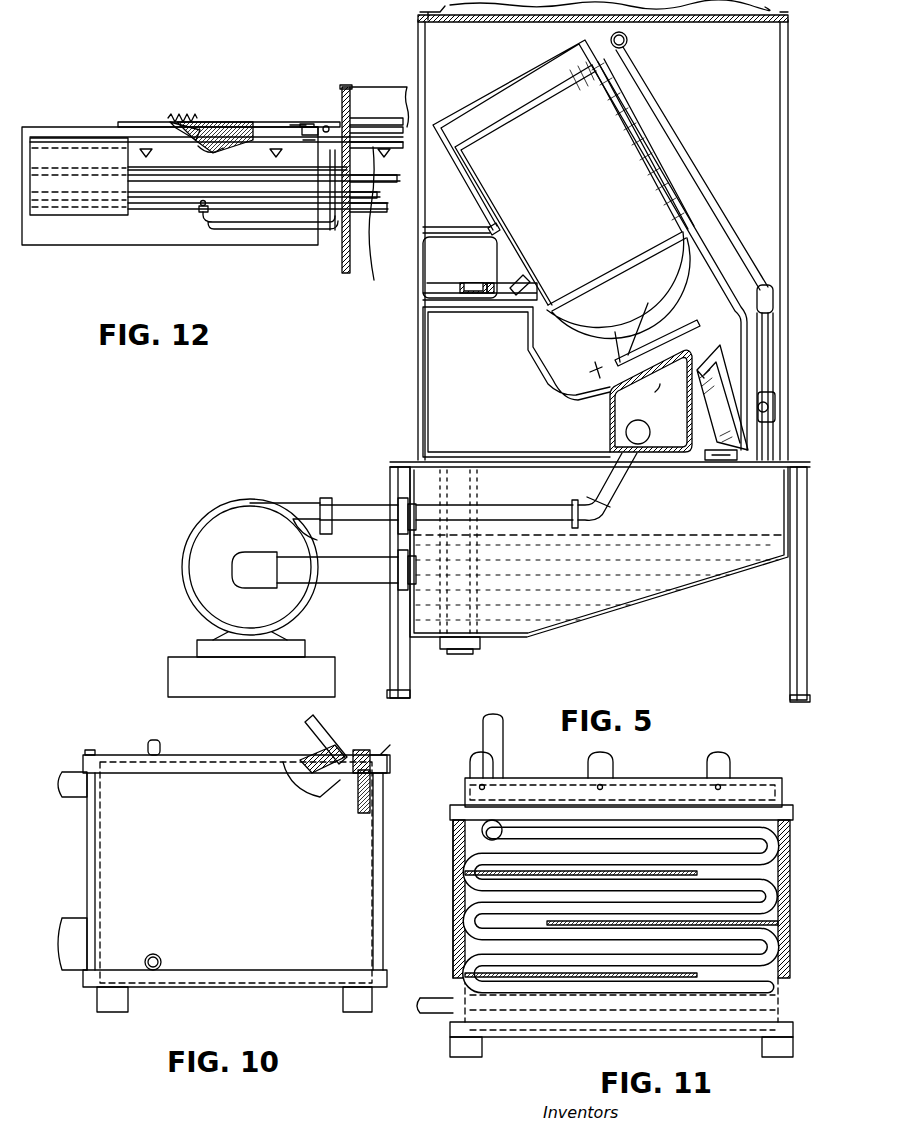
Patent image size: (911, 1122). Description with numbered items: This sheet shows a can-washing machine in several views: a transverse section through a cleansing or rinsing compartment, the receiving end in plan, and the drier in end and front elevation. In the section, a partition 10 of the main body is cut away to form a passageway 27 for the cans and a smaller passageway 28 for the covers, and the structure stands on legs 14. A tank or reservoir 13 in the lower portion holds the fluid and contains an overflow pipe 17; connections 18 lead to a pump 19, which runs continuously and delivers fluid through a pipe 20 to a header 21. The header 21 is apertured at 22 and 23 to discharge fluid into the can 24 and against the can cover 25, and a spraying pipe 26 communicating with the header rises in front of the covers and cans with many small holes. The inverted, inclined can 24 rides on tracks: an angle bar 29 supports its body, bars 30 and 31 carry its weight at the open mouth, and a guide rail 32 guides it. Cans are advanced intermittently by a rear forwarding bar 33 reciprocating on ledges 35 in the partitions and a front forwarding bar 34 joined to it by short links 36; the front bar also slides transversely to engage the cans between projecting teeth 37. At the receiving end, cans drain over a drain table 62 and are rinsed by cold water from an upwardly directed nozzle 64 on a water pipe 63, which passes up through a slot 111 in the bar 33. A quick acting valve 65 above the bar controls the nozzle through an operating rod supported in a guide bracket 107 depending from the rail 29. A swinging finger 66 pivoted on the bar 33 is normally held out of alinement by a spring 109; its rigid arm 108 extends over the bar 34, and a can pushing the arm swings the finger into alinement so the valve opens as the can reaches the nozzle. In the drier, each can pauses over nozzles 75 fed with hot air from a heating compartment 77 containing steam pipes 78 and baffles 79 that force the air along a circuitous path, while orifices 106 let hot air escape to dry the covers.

In FIG. 12, the partition 10 is at (340, 270).
In FIG. 5, the partition 10 is at (770, 128).
In FIG. 5, the tank or reservoir 13 is at (599, 552).
In FIG. 5, the legs 14 is at (788, 652).
In FIG. 5, the overflow pipe 17 is at (480, 647).
In FIG. 5, the connections 18 is at (355, 570).
In FIG. 5, the pump 19 is at (200, 572).
In FIG. 5, the pipe 20 is at (352, 508).
In FIG. 5, the header 21 is at (620, 412).
In FIG. 5, the aperture 22 is at (660, 392).
In FIG. 5, the aperture 23 is at (690, 412).
In FIG. 5, the can 24 is at (650, 198).
In FIG. 5, the can cover 25 is at (775, 409).
In FIG. 5, the spraying pipe 26 is at (757, 275).
In FIG. 5, the passageway 27 is at (703, 250).
In FIG. 5, the passageway 28 is at (738, 373).
In FIG. 12, the angle bar 29 is at (145, 137).
In FIG. 5, the angle bar 29 is at (493, 233).
In FIG. 5, the bar 30 is at (632, 365).
In FIG. 5, the bar 31 is at (678, 348).
In FIG. 5, the guide rail 32 is at (598, 376).
In FIG. 5, the rear forwarding bar 33 is at (471, 283).
In FIG. 5, the front forwarding bar 34 is at (492, 285).
In FIG. 5, the ledge 35 is at (486, 300).
In FIG. 12, the link 36 is at (230, 122).
In FIG. 5, the projecting teeth 37 is at (512, 292).
In FIG. 12, the drain table 62 is at (180, 248).
In FIG. 12, the water pipe 63 is at (318, 126).
In FIG. 12, the nozzle 64 is at (202, 234).
In FIG. 12, the quick acting valve 65 is at (305, 140).
In FIG. 12, the swinging finger 66 is at (180, 138).
In FIG. 10, the nozzle 75 is at (313, 733).
In FIG. 11, the nozzle 75 is at (710, 762).
In FIG. 10, the heating compartment 77 is at (222, 876).
In FIG. 10, the steam pipes 78 is at (366, 800).
In FIG. 11, the steam pipes 78 is at (455, 953).
In FIG. 11, the baffles 79 is at (765, 938).
In FIG. 10, the orifices 106 is at (357, 758).
In FIG. 11, the orifices 106 is at (598, 786).
In FIG. 12, the guide bracket 107 is at (300, 122).
In FIG. 12, the arm 108 is at (200, 152).
In FIG. 12, the spring 109 is at (178, 114).
In FIG. 12, the slot 111 is at (292, 124).